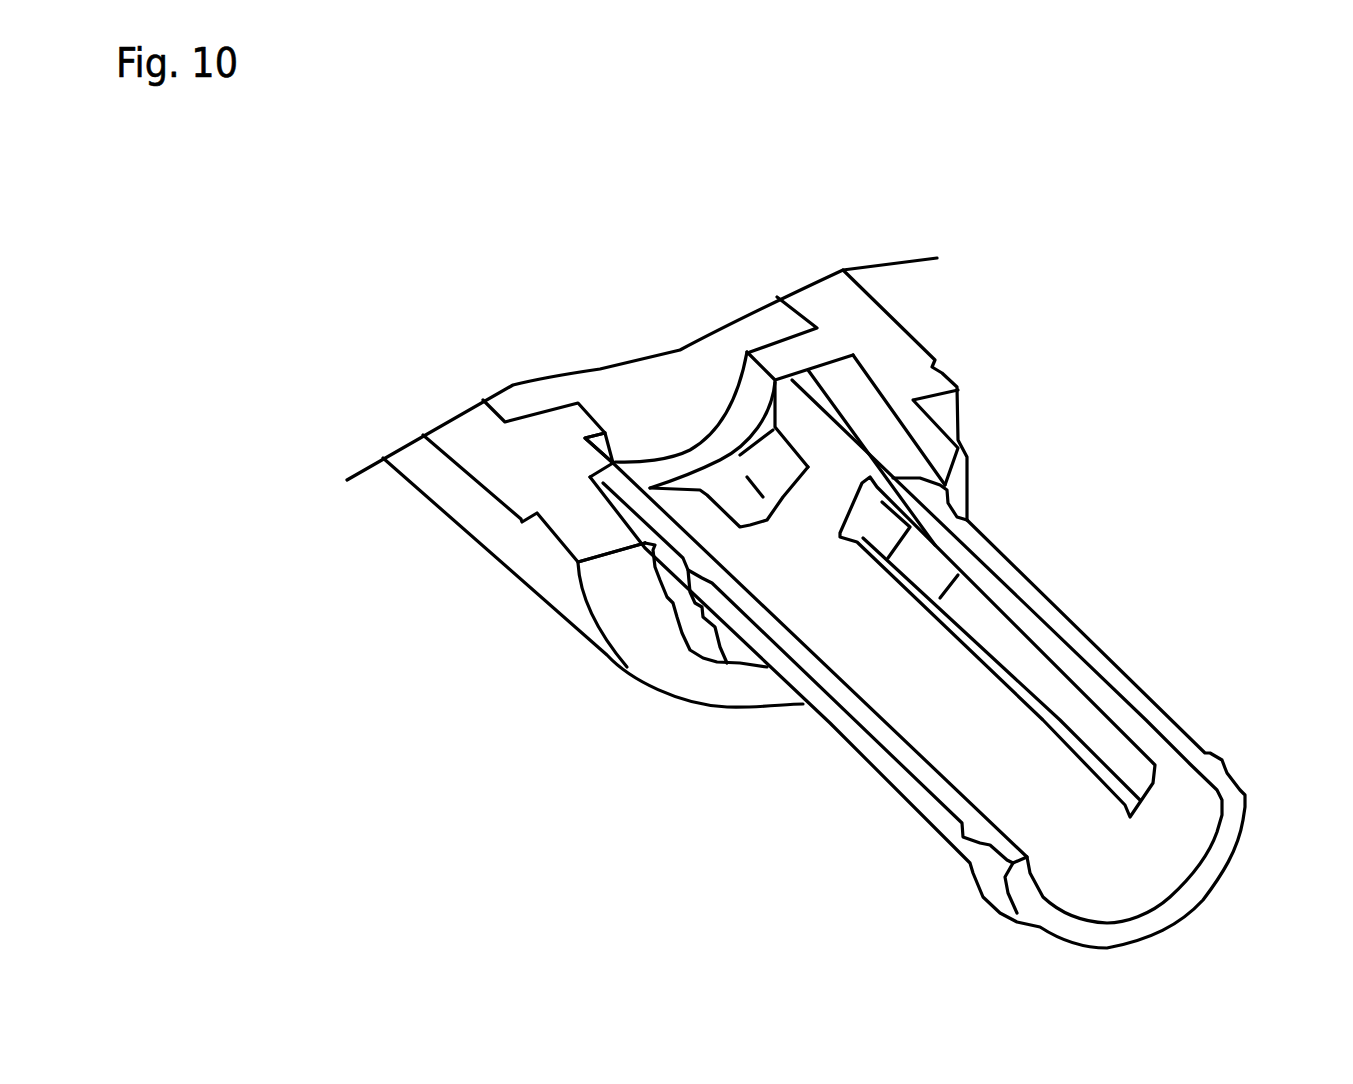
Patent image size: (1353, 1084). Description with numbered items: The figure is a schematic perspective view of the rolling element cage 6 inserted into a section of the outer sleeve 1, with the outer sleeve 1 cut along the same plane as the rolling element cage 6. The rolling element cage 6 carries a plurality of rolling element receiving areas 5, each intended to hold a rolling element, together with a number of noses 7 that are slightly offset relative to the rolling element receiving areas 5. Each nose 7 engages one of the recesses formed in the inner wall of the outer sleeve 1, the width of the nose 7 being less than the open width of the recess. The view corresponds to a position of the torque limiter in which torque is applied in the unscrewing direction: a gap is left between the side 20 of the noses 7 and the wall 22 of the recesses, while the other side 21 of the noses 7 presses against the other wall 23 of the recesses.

The outer sleeve 1 is at (930, 300).
The rolling element receiving area 5 is at (1100, 718).
The rolling element cage 6 is at (1167, 600).
The nose 7 is at (797, 418).
The side of the nose 20 is at (722, 515).
The other side of the nose 21 is at (787, 452).
The wall of the recess 22 is at (745, 470).
The other wall of the recess 23 is at (807, 462).